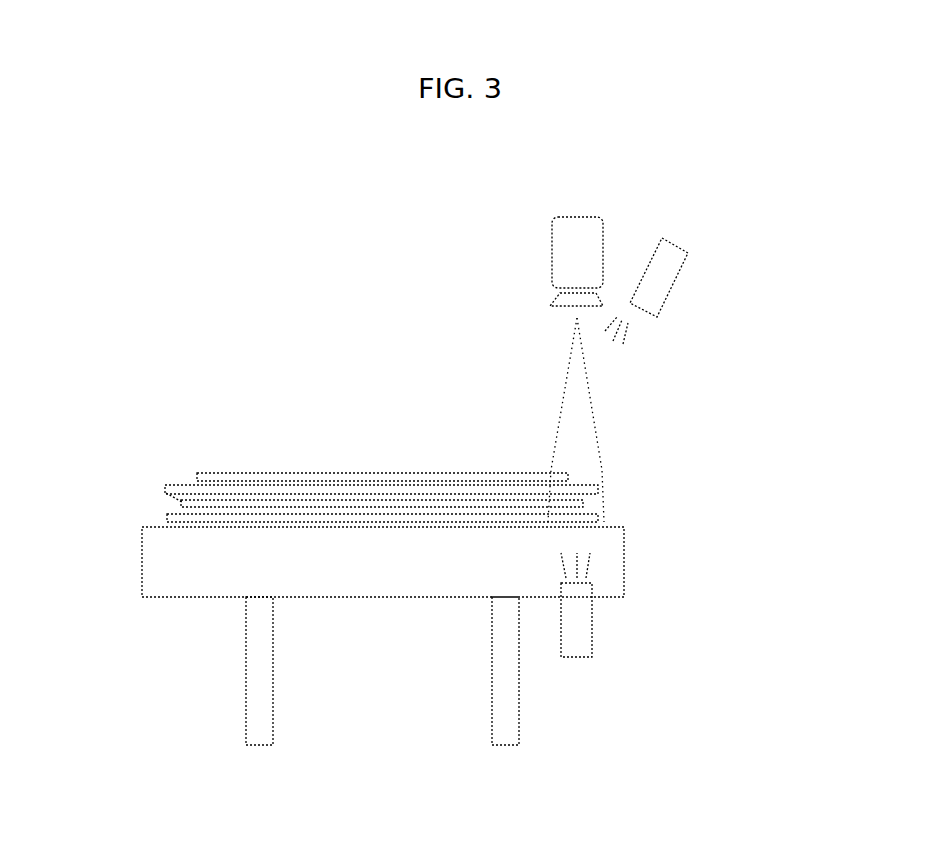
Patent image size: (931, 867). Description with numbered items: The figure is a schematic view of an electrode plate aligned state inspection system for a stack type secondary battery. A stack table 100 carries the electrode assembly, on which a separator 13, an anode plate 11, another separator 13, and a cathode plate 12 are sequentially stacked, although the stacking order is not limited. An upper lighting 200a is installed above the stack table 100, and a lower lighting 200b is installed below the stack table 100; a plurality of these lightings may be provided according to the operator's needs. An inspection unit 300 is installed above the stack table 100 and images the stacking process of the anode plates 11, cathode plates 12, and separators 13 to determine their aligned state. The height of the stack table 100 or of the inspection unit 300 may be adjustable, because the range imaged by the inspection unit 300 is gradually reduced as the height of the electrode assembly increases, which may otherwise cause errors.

The inspection unit 300 is at (550, 252).
The upper lighting 200a is at (673, 284).
The lower lighting 200b is at (592, 632).
The stack table 100 is at (626, 556).
The anode plate 11 is at (165, 486).
The cathode plate 12 is at (364, 473).
The separator 13 is at (600, 488).